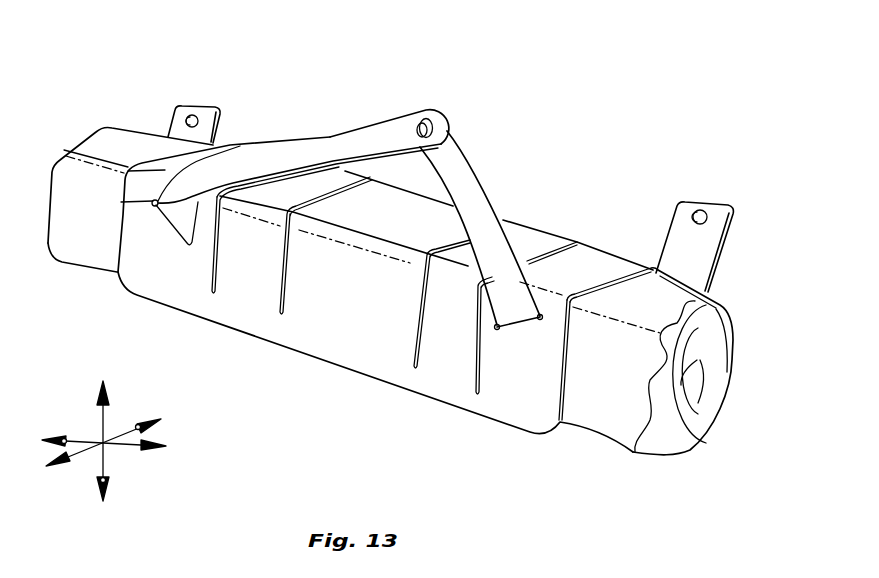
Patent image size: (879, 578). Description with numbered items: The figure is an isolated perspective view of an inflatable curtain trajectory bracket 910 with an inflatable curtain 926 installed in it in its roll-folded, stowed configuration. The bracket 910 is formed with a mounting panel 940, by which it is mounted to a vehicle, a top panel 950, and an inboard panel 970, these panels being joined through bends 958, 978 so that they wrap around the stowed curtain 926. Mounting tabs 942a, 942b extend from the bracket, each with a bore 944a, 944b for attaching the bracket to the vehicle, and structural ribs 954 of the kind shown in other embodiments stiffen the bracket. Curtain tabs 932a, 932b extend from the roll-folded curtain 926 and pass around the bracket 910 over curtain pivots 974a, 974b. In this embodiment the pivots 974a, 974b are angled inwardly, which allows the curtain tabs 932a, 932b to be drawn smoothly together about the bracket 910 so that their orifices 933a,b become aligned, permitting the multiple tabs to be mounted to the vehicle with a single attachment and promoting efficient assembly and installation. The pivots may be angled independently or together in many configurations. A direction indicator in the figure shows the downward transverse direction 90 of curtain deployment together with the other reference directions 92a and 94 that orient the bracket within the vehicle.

The inflatable curtain trajectory bracket 910 is at (511, 121).
The inboard panel 970 is at (526, 418).
The bend 978 is at (442, 370).
The inflatable curtain 926 is at (684, 436).
The mounting panel 940 is at (672, 278).
The mounting tab 942a is at (704, 198).
The bore 944a is at (707, 218).
The mounting tab 942b is at (194, 108).
The bore 944b is at (188, 117).
The top panel 950 is at (226, 153).
The curtain tab 932b is at (362, 143).
The orifices 933a,b is at (435, 112).
The curtain tab 932a is at (472, 212).
The curtain pivot 974a is at (543, 332).
The curtain pivot 974b is at (152, 201).
The structural ribs 954 is at (214, 286).
The bend 958 is at (352, 238).
The transverse direction 90 is at (106, 462).
The lateral axis 94 is at (88, 437).
The longitudinal axis 92a is at (128, 427).